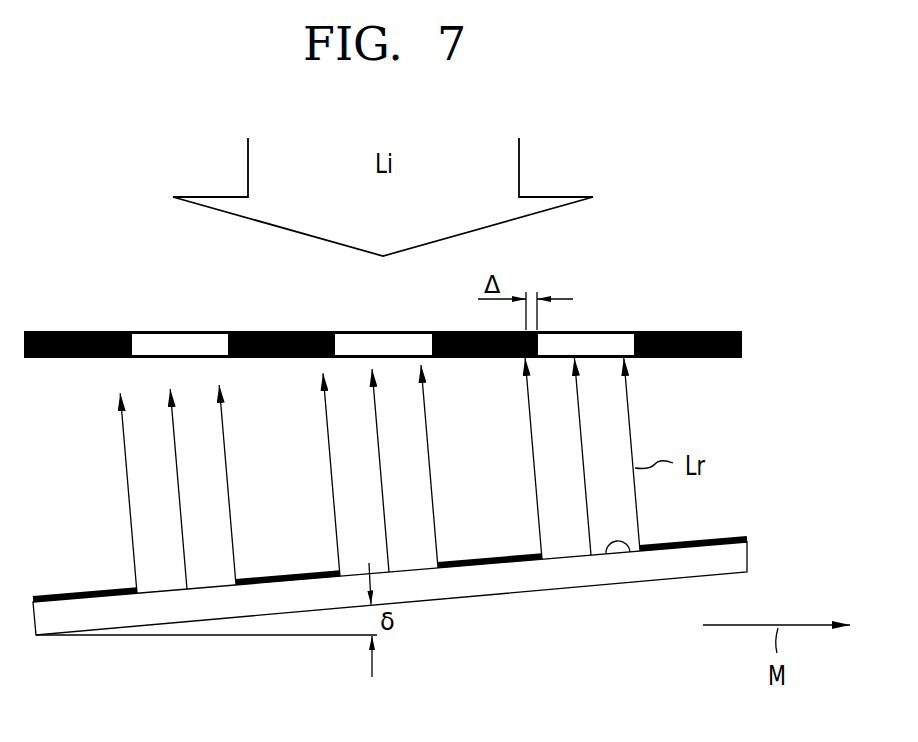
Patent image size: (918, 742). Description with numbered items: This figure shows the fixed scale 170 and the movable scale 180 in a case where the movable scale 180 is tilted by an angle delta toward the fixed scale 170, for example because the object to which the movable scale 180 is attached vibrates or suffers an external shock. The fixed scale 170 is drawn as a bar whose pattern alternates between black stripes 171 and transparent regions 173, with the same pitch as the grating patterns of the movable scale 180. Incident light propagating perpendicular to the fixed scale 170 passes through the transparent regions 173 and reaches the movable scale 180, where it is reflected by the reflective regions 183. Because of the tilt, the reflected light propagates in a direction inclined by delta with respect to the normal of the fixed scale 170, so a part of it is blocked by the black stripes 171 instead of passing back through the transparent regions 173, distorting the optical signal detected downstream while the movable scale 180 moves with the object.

The fixed scale 170 is at (433, 312).
The black stripes 171 is at (76, 331).
The transparent regions 173 is at (171, 331).
The movable scale 180 is at (440, 574).
The reflective regions 183 is at (632, 557).